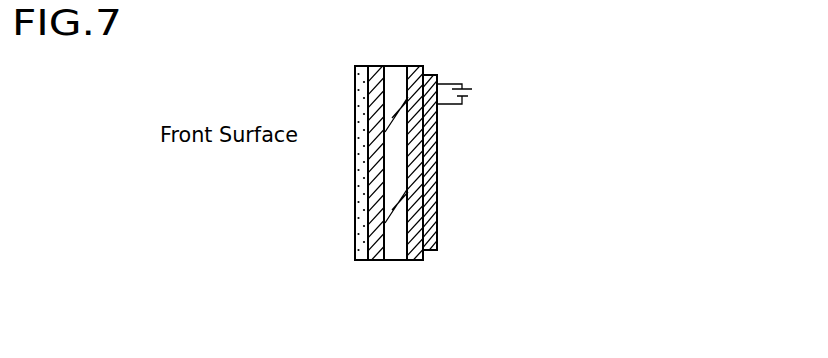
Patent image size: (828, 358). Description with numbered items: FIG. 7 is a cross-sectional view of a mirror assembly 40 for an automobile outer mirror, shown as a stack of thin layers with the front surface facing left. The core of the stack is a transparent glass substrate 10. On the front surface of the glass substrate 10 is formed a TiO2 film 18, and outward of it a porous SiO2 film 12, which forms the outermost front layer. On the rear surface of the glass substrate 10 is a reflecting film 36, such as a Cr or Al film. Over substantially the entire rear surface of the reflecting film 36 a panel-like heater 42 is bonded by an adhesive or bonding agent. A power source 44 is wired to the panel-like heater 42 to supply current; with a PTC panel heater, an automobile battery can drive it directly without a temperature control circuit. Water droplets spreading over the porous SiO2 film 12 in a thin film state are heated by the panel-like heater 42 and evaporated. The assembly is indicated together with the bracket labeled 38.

The transparent glass substrate 10 is at (395, 247).
The porous SiO2 film 12 is at (356, 262).
The TiO2 film 18 is at (373, 262).
The reflecting film 36 is at (416, 262).
The electrode assembly 38 is at (563, 118).
The mirror assembly 40 is at (512, 222).
The panel-like heater 42 is at (437, 150).
The power source 44 is at (462, 104).